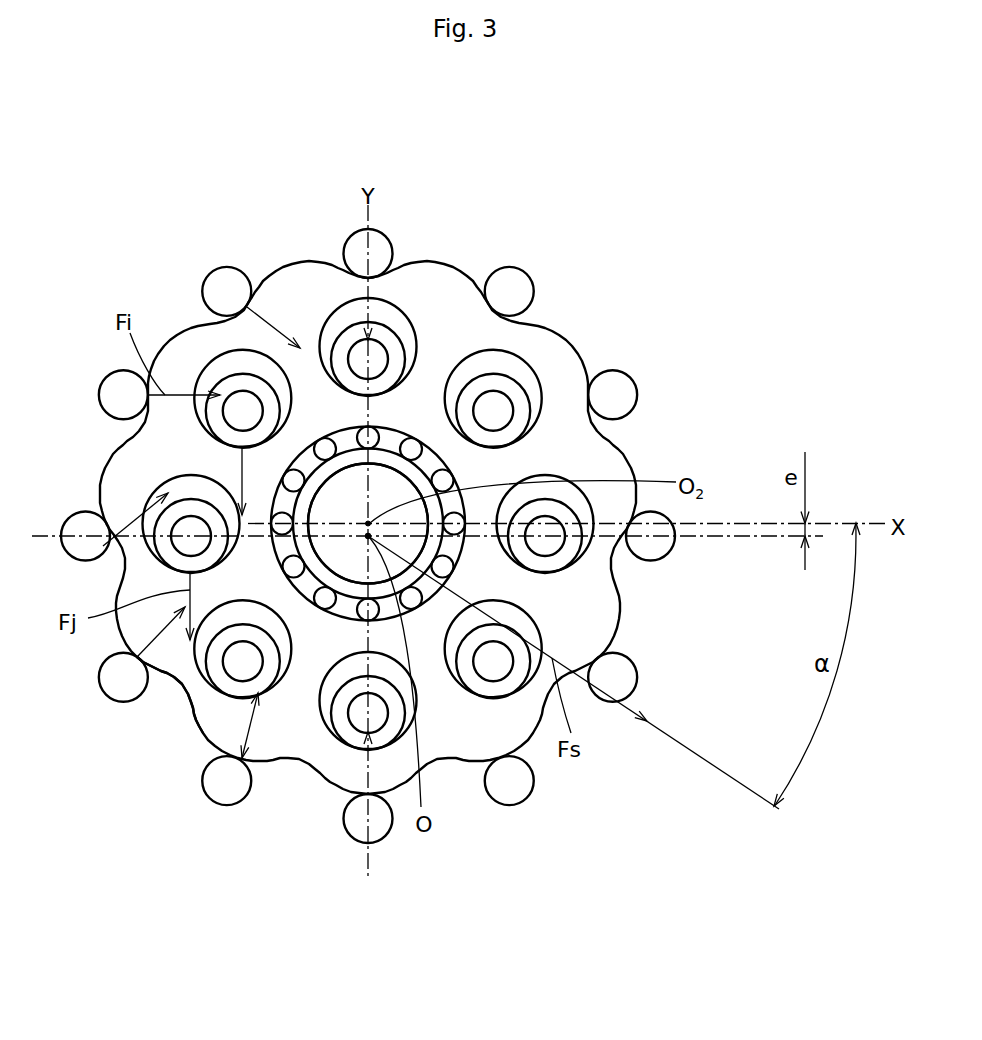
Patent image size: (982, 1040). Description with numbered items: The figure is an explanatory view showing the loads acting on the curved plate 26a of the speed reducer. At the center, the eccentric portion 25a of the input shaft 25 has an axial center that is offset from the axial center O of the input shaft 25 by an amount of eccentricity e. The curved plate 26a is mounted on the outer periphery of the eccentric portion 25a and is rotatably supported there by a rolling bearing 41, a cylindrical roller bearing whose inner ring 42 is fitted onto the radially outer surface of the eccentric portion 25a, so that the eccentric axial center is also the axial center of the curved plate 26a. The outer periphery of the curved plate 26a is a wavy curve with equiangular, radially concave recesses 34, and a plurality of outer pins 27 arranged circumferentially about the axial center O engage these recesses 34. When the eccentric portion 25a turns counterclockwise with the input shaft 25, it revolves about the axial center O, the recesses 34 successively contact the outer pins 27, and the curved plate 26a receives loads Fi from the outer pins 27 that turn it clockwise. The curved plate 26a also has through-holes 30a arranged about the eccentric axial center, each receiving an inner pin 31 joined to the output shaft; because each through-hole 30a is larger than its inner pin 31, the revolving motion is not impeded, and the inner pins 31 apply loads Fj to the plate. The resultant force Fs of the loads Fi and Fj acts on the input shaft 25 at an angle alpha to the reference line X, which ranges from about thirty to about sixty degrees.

The input shaft 25 is at (358, 545).
The eccentric portion 25a is at (388, 488).
The curved plate 26a is at (297, 278).
The outer pins 27 is at (222, 282).
The through-holes 30a is at (163, 483).
The inner pin 31 is at (223, 378).
The recesses 34 is at (180, 692).
The rolling bearing 41 is at (417, 440).
The inner ring 42 is at (440, 453).